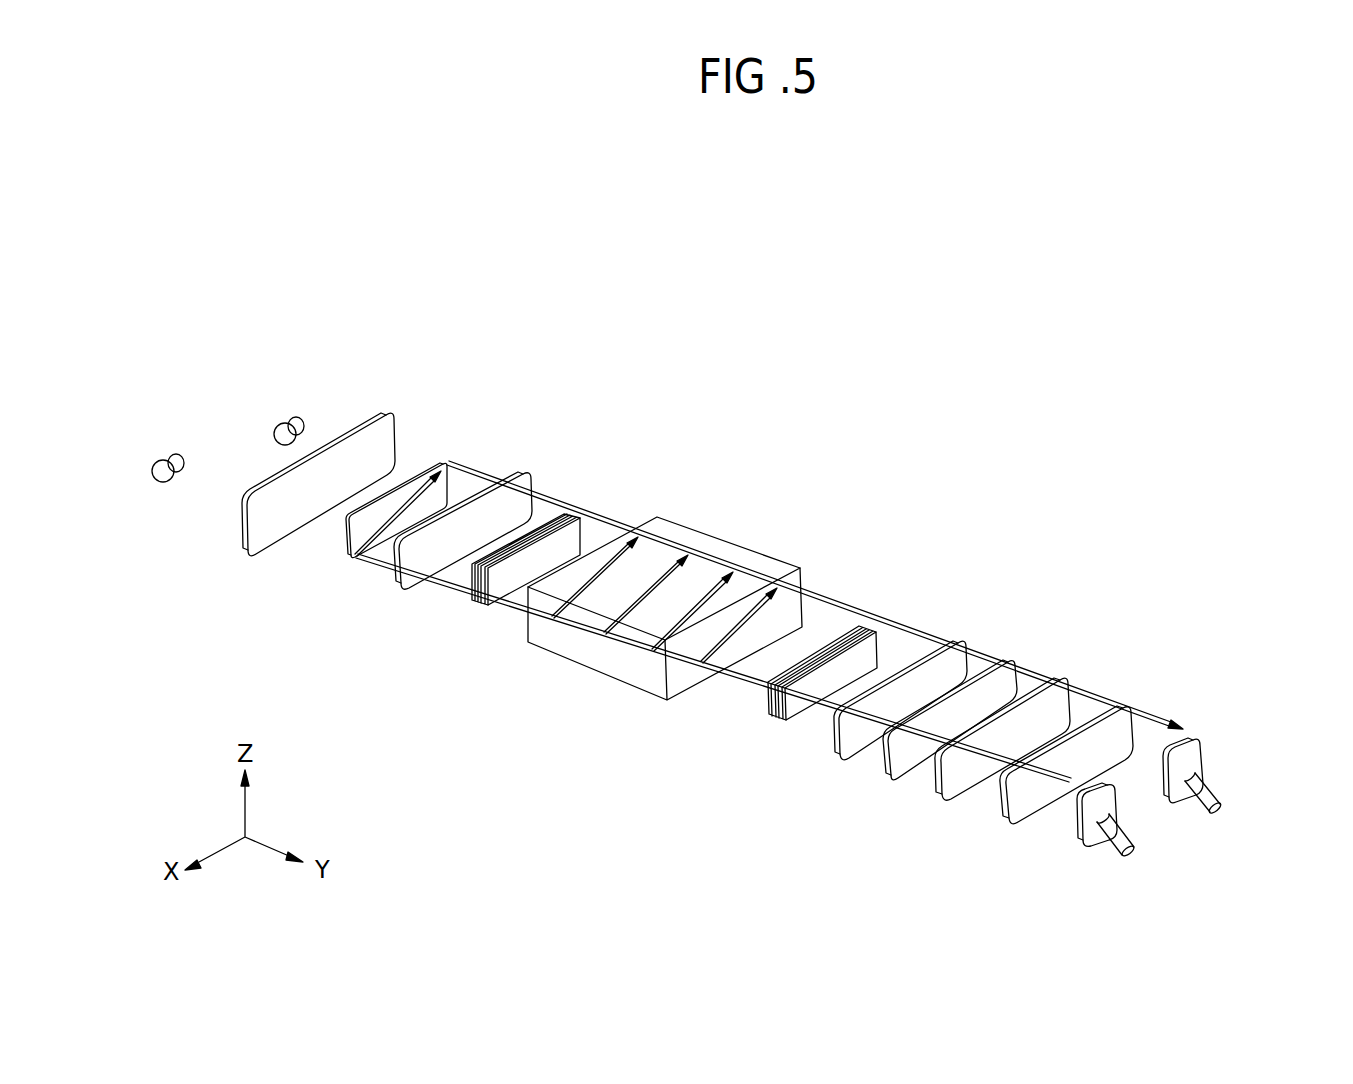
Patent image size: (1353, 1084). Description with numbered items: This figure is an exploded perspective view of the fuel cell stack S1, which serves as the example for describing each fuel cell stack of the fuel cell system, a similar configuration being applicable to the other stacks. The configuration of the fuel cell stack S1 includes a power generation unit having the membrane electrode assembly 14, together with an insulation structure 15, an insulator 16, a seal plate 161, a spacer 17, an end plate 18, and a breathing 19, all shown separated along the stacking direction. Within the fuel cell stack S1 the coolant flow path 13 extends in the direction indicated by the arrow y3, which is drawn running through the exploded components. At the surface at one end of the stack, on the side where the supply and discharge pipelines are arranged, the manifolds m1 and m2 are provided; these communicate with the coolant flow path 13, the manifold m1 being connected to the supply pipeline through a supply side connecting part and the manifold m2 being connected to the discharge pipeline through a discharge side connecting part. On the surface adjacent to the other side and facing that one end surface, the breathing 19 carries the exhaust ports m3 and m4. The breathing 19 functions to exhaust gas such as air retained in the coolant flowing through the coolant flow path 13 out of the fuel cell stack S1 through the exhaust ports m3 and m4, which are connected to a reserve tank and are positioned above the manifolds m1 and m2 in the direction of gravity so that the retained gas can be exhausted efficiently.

The fuel cell stack S1 is at (845, 416).
The coolant flow path 13 is at (845, 596).
The membrane electrode assembly 14 is at (722, 540).
The insulation structure 15 is at (578, 517).
The insulator 16 is at (528, 470).
The seal plate 161 is at (446, 460).
The spacer 17 is at (1064, 675).
The end plate 18 is at (1127, 704).
The breathing 19 is at (386, 410).
The manifold m1 is at (1080, 849).
The manifold m2 is at (1194, 735).
The exhaust port m3 is at (172, 452).
The exhaust port m4 is at (293, 415).
The arrow y3 is at (748, 682).